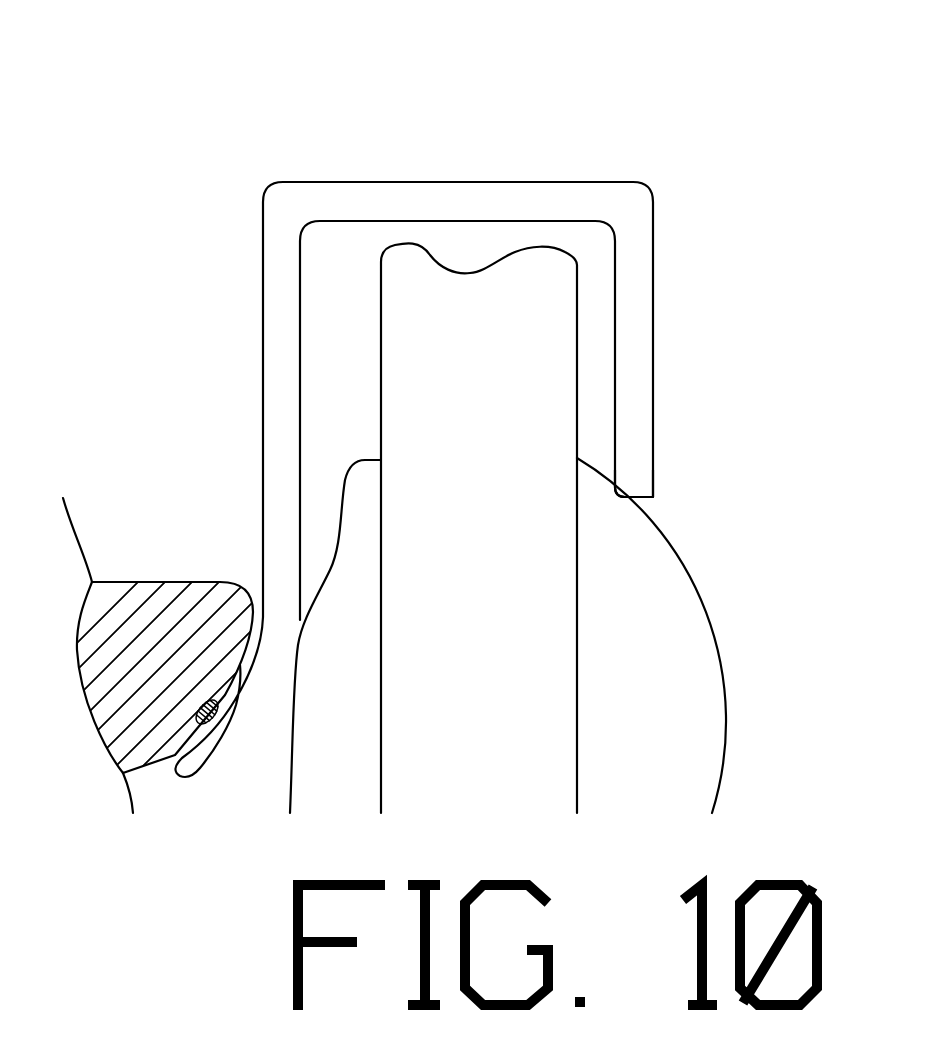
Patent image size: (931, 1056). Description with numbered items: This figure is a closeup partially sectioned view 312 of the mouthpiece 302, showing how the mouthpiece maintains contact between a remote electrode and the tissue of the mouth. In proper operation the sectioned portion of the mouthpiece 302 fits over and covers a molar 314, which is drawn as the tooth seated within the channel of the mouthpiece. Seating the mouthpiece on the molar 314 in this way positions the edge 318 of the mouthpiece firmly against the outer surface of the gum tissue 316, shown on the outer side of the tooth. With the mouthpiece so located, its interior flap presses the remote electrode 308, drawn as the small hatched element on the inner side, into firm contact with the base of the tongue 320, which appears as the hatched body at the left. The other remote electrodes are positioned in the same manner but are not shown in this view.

The mouthpiece 302 is at (383, 205).
The remote electrode 308 is at (198, 772).
The closeup partially sectioned view 312 is at (645, 110).
The molar 314 is at (552, 595).
The gum tissue 316 is at (690, 683).
The edge 318 is at (623, 497).
The tongue 320 is at (92, 580).